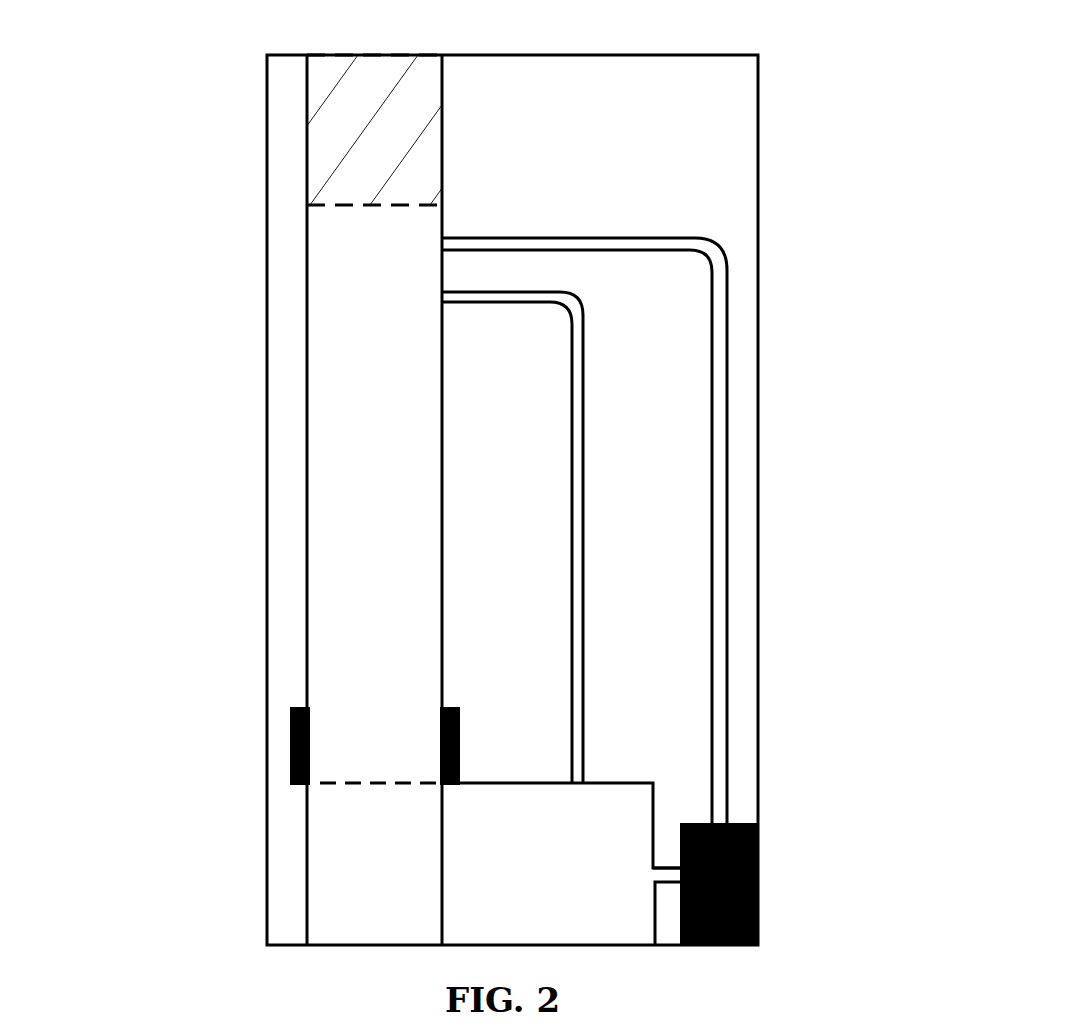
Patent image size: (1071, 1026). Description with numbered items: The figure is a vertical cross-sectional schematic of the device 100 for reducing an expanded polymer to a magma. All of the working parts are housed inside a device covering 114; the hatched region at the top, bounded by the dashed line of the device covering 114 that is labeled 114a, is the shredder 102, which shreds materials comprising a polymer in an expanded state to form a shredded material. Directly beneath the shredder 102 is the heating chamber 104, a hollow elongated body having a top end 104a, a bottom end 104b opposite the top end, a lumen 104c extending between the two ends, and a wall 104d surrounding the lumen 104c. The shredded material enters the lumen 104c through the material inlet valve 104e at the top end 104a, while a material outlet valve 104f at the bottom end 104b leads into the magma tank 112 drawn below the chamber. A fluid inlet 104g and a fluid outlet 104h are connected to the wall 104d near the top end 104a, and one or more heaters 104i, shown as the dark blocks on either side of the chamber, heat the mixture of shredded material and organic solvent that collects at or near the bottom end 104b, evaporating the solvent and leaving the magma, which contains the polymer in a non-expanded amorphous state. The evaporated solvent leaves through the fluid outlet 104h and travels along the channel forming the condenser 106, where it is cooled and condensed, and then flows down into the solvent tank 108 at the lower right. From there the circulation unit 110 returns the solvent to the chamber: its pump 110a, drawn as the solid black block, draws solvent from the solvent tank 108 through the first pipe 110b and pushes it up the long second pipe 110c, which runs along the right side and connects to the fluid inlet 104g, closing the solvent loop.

The device 100 is at (210, 120).
The shredder 102 is at (394, 130).
The heating chamber 104 is at (350, 500).
The top end 104a is at (278, 212).
The bottom end 104b is at (279, 786).
The lumen 104c is at (368, 529).
The wall 104d is at (431, 648).
The material inlet valve 104e is at (347, 240).
The material outlet valve 104f is at (333, 802).
The fluid inlet 104g is at (402, 250).
The fluid outlet 104h is at (412, 297).
The heater 104i is at (430, 768).
The condenser 106 is at (598, 626).
The solvent tank 108 is at (561, 864).
The circulation unit 110 is at (698, 686).
The pump 110a is at (719, 884).
The first pipe 110b is at (668, 856).
The second pipe 110c is at (744, 463).
The magma tank 112 is at (366, 868).
The device covering 114 is at (772, 198).
The housing top opening 114a is at (430, 38).